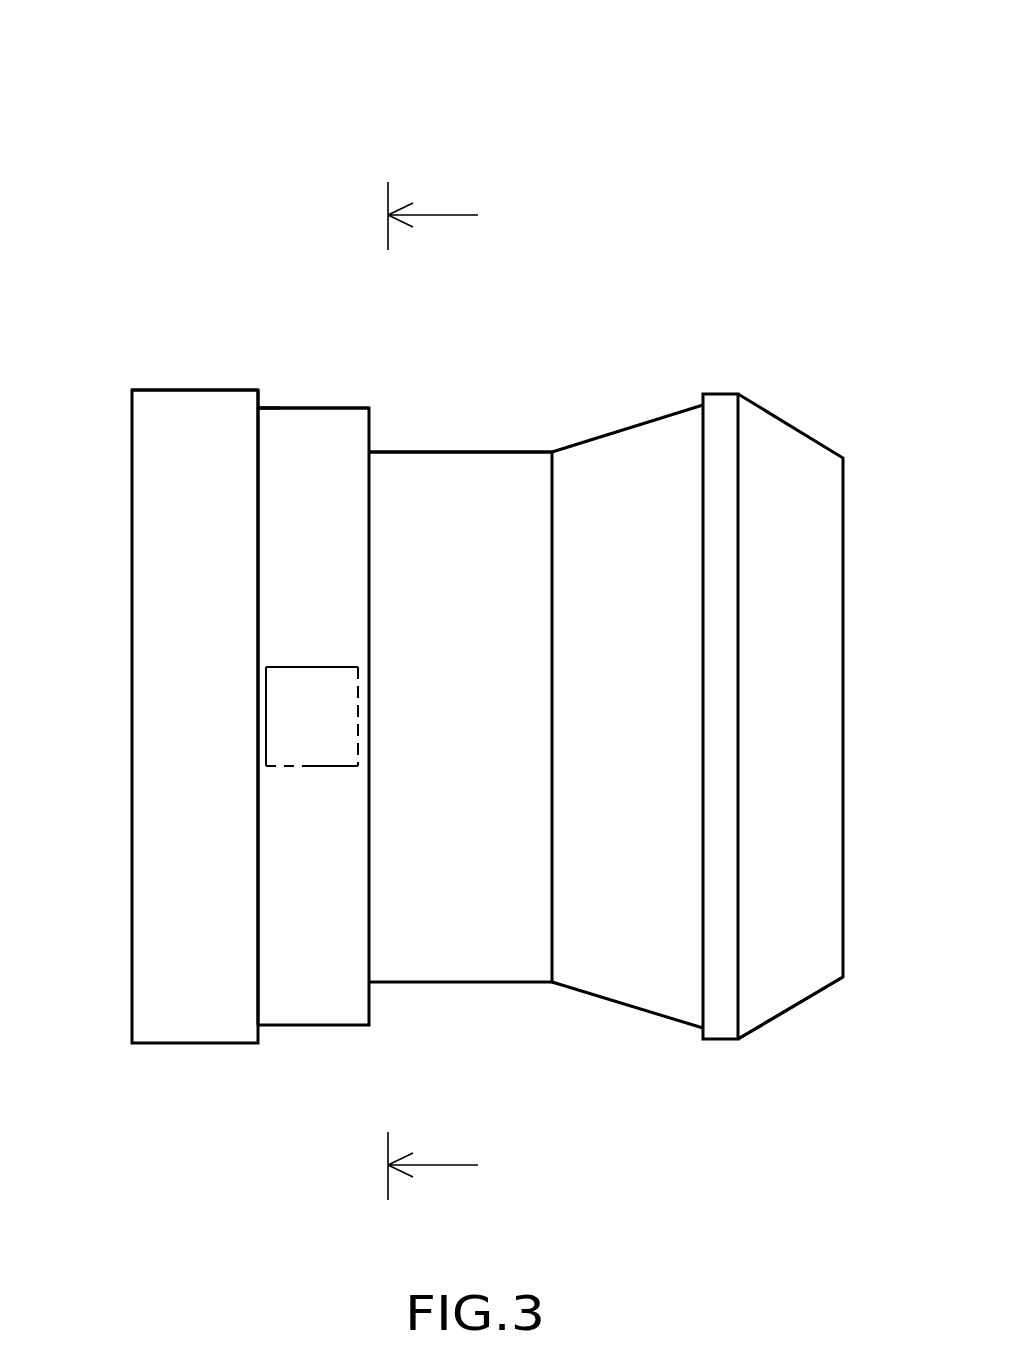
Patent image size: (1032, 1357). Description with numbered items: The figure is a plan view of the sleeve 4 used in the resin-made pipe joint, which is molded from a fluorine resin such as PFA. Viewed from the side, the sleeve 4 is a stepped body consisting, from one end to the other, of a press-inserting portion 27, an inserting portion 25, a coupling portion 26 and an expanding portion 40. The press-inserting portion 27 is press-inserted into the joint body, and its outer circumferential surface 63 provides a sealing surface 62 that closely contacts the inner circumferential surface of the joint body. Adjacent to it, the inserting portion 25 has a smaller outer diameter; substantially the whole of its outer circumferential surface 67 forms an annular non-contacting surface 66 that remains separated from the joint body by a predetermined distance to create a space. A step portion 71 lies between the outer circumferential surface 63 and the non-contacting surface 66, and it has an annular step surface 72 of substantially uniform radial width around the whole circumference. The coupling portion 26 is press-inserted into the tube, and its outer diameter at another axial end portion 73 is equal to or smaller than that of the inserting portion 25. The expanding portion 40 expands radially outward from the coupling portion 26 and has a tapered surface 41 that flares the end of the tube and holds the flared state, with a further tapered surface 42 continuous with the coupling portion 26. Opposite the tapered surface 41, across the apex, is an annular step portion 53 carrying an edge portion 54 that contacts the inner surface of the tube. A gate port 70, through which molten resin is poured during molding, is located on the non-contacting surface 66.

The sleeve 4 is at (242, 154).
The inserting portion 25 is at (328, 1028).
The coupling portion 26 is at (452, 985).
The press-inserting portion 27 is at (132, 641).
The expanding portion 40 is at (798, 1008).
The tapered surface 41 is at (828, 630).
The tapered surface 42 is at (613, 1003).
The step portion 53 is at (699, 455).
The edge portion 54 is at (675, 749).
The sealing surface 62 is at (195, 341).
The outer circumferential surface 63 is at (222, 390).
The non-contacting surface 66 is at (341, 350).
The outer circumferential surface 67 is at (343, 408).
The gate port 70 is at (283, 768).
The step portion 71 is at (265, 396).
The step surface 72 is at (259, 599).
The another axial end portion 73 is at (380, 462).